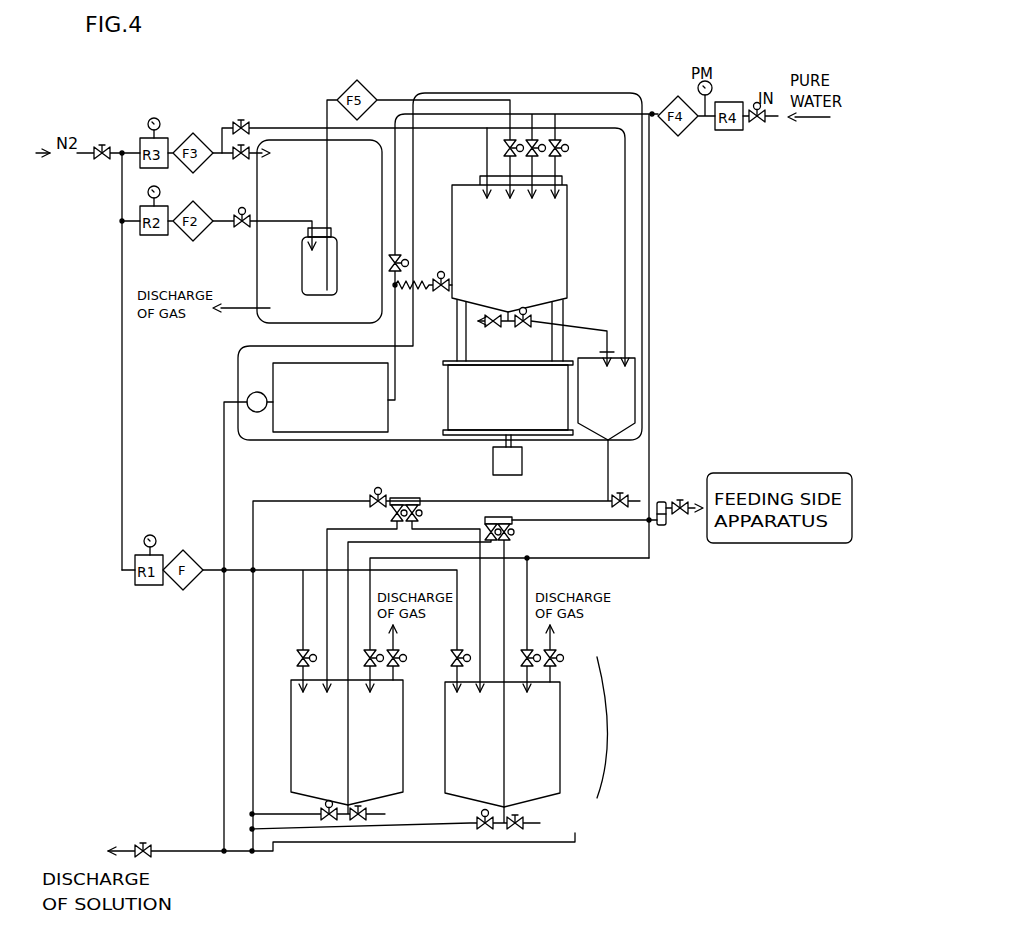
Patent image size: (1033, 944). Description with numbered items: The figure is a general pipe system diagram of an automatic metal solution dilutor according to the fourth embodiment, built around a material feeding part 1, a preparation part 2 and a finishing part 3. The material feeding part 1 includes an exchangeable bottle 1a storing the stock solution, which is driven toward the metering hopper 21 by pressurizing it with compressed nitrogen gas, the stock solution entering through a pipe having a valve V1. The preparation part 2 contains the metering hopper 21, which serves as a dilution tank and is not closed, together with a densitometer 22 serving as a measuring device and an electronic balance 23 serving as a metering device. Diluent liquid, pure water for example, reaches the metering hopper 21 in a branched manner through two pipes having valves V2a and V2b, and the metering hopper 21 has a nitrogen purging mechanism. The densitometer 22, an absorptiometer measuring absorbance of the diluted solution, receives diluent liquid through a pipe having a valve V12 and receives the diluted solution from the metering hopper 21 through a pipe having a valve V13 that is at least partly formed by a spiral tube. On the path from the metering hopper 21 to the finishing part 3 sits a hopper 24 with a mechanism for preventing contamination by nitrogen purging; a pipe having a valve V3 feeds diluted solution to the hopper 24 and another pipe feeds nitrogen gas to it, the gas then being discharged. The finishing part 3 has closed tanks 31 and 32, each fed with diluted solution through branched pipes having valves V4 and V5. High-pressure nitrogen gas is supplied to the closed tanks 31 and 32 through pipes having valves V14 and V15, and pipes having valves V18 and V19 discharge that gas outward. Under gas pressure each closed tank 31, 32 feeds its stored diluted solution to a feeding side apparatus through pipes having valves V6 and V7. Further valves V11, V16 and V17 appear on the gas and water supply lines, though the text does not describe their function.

The material feeding part 1 is at (257, 262).
The exchangeable bottle 1a is at (339, 272).
The preparation part 2 is at (573, 93).
The metering hopper 21 is at (567, 246).
The densitometer 22 is at (337, 365).
The electronic balance 23 is at (448, 417).
The hopper 24 is at (618, 357).
The finishing part 3 is at (612, 740).
The closed tank 31 is at (403, 729).
The closed tank 32 is at (560, 729).
The valve V1 is at (506, 153).
The valve V2a is at (563, 148).
The valve V2b is at (560, 160).
The valve V3 is at (522, 331).
The valve V4 is at (392, 519).
The valve V5 is at (420, 520).
The valve V6 is at (510, 543).
The valve V7 is at (516, 533).
The valve V11 is at (763, 125).
The valve V12 is at (406, 258).
The valve V13 is at (439, 294).
The valve V14 is at (299, 654).
The valve V15 is at (455, 655).
The valve V16 is at (366, 656).
The valve V17 is at (524, 656).
The valve V18 is at (402, 660).
The valve V19 is at (559, 660).